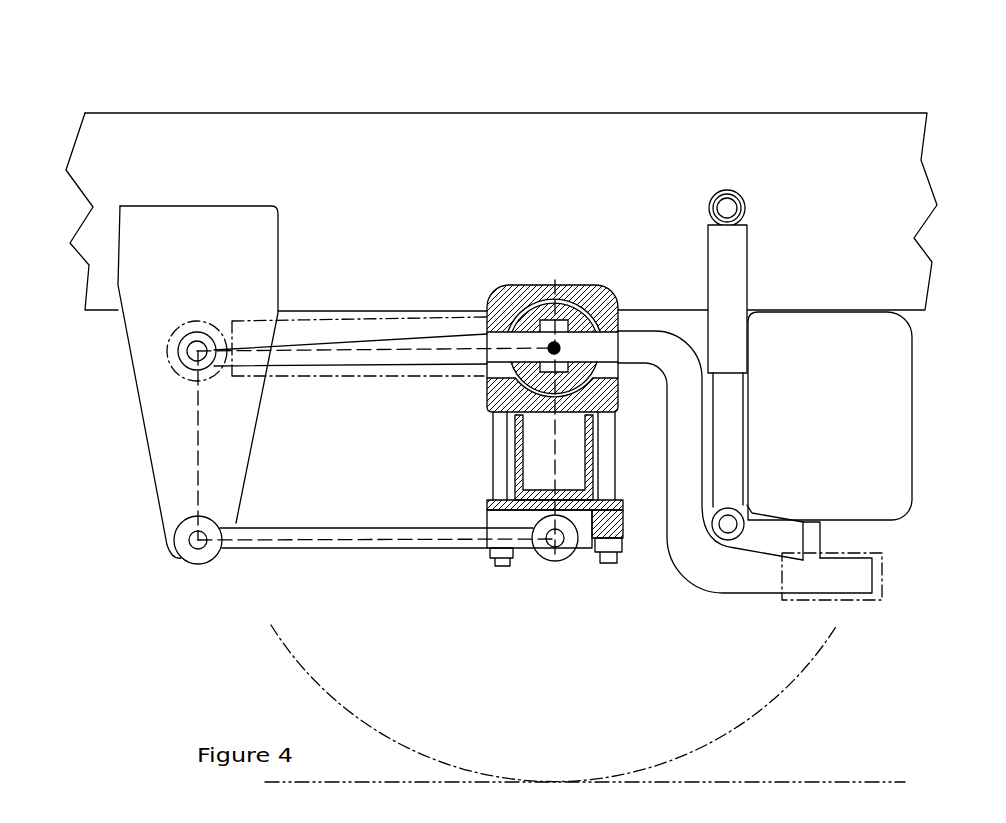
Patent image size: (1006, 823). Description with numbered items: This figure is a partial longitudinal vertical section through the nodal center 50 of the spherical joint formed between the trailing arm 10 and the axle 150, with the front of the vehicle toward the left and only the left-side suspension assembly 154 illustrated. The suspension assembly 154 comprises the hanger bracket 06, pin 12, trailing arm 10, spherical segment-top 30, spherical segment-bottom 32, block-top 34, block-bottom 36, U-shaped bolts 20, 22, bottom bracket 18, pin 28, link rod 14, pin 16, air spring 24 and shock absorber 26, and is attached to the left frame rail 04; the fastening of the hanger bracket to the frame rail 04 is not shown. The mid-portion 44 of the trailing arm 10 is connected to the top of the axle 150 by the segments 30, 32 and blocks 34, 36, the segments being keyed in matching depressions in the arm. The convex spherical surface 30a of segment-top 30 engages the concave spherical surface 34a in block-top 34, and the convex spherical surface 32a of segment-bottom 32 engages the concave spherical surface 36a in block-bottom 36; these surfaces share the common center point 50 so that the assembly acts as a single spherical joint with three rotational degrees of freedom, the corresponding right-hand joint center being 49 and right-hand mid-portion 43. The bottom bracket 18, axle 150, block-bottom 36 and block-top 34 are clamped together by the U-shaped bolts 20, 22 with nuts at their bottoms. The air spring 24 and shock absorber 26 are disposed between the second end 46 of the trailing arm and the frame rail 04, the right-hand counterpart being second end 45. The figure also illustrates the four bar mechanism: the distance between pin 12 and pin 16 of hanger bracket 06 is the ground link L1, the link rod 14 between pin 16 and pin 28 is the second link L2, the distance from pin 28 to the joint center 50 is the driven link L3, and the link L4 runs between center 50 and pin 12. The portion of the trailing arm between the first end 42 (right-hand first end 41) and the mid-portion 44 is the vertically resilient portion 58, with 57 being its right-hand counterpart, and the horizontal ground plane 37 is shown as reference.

The left frame rail 04 is at (735, 147).
The hanger bracket 06 is at (167, 468).
The trailing arm 10 is at (478, 335).
The pin 12 is at (199, 349).
The link rod 14 is at (298, 548).
The pin 16 is at (198, 541).
The bottom bracket 18 is at (505, 477).
The U-shaped bolt 20 is at (505, 520).
The U-shaped bolt 22 is at (505, 520).
The air spring 24 is at (895, 435).
The shock absorber 26 is at (723, 278).
The pin 28 is at (550, 543).
The spherical segment-top 30 is at (535, 317).
The convex spherical surface 30a is at (560, 302).
The spherical segment-bottom 32 is at (578, 377).
The convex spherical surface 32a is at (532, 388).
The block-top 34 is at (505, 297).
The concave spherical surface 34a is at (560, 302).
The block-bottom 36 is at (607, 394).
The concave spherical surface 36a is at (532, 388).
The horizontal ground plane 37 is at (752, 780).
The first end of trailing arm 41 is at (173, 334).
The first end of trailing arm 42 is at (173, 334).
The mid-portion of trailing arm 43 is at (604, 342).
The mid-portion of trailing arm 44 is at (604, 342).
The second end of trailing arm 45 is at (882, 573).
The second end of trailing arm 46 is at (882, 573).
The spherical joint center 49 is at (554, 348).
The spherical joint center 50 is at (554, 348).
The vertically resilient portion of trailing arm 57 is at (360, 320).
The vertically resilient portion of trailing arm 58 is at (360, 320).
The axle 150 is at (518, 437).
The suspension assembly 154 is at (181, 640).
The ground link L1 is at (198, 433).
The second link L2 is at (317, 540).
The driven link L3 is at (555, 438).
The link L4 is at (445, 348).